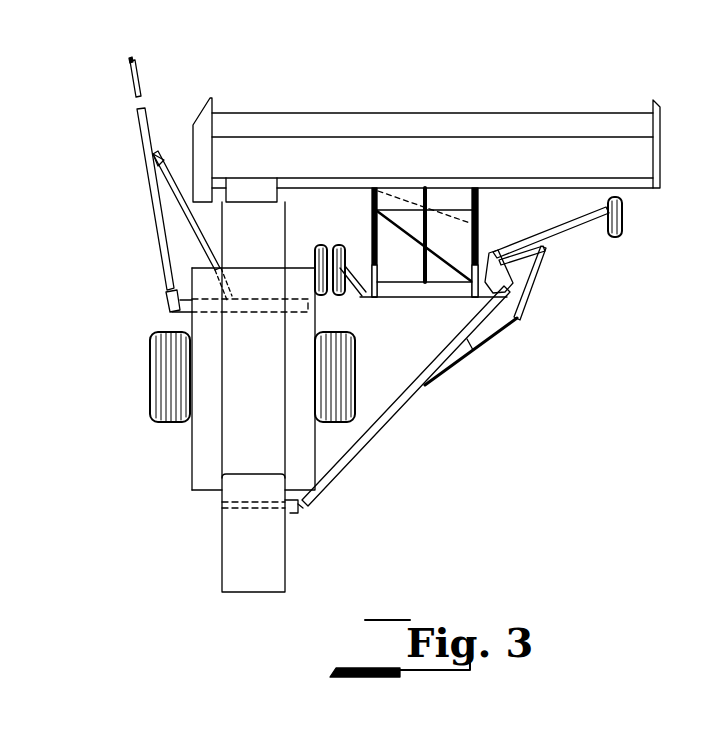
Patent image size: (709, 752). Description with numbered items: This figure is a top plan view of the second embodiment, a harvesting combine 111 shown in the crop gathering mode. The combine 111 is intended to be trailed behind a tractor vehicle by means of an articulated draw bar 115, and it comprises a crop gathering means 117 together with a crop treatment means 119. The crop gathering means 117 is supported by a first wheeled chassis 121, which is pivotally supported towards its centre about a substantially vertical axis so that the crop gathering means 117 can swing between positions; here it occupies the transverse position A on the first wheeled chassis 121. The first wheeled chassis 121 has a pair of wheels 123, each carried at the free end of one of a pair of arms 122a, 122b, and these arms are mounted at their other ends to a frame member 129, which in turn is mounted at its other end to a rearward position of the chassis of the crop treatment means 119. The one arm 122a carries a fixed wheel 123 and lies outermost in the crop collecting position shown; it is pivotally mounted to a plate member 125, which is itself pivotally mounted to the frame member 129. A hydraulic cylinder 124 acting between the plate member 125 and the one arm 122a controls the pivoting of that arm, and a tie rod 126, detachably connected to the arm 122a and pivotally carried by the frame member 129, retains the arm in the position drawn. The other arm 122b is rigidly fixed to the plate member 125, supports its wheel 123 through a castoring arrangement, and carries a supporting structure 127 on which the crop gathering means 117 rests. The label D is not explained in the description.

The harvesting combine 111 is at (138, 414).
The articulated draw bar 115 is at (148, 154).
The crop gathering means 117 is at (444, 117).
The crop treatment means 119 is at (190, 318).
The first wheeled chassis 121 is at (545, 296).
The one arm 122a is at (583, 228).
The other arm 122b is at (428, 291).
The wheels 123 is at (342, 296).
The hydraulic cylinder 124 is at (519, 263).
The plate member 125 is at (493, 273).
The tie rod 126 is at (526, 297).
The supporting structure 127 is at (369, 204).
The frame member 129 is at (398, 402).
The transverse position A is at (536, 106).
The direction D is at (524, 322).